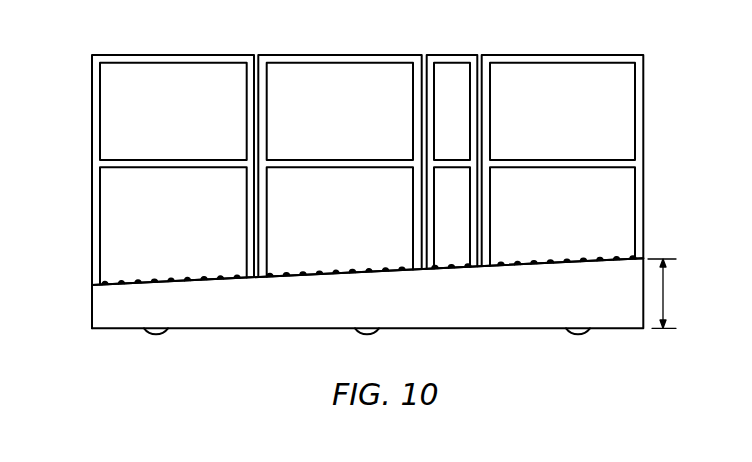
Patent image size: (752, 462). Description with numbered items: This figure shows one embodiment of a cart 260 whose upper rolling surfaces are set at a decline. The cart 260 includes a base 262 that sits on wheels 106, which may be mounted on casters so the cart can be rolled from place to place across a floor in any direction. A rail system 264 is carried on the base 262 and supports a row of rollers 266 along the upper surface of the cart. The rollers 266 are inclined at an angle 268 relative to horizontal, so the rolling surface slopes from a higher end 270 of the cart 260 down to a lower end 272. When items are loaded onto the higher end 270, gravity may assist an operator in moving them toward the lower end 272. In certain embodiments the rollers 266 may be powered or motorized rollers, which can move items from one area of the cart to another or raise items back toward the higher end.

The cart 260 is at (336, 142).
The rail system 264 is at (92, 142).
The rollers 266 is at (552, 259).
The higher end 270 is at (646, 259).
The base 262 is at (629, 321).
The angle 268 is at (664, 300).
The lower end 272 is at (92, 308).
The wheels 106 is at (156, 336).